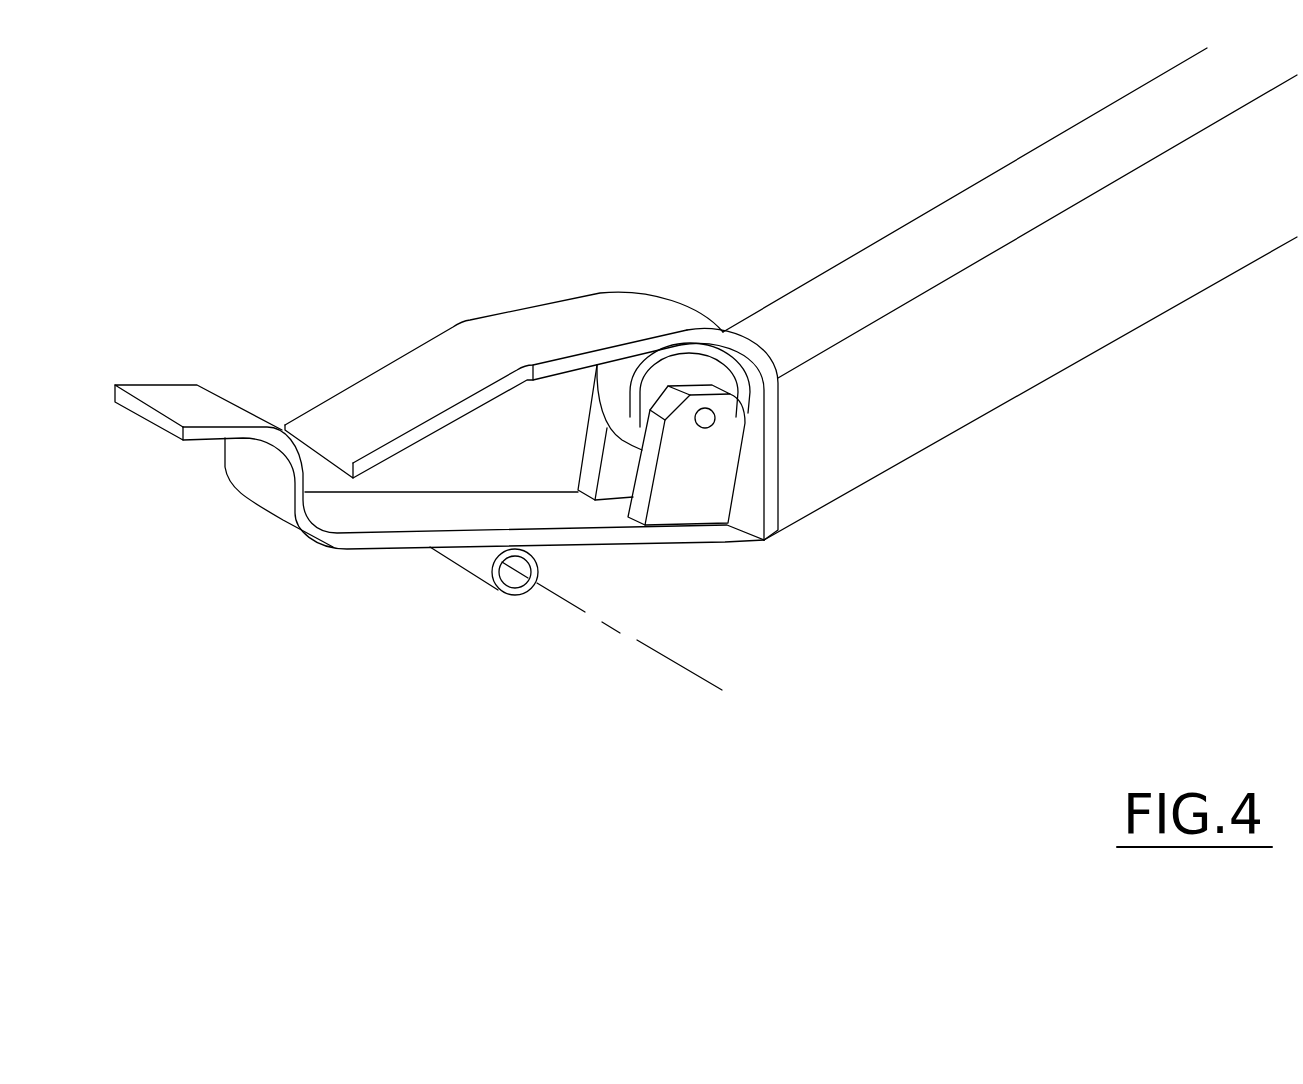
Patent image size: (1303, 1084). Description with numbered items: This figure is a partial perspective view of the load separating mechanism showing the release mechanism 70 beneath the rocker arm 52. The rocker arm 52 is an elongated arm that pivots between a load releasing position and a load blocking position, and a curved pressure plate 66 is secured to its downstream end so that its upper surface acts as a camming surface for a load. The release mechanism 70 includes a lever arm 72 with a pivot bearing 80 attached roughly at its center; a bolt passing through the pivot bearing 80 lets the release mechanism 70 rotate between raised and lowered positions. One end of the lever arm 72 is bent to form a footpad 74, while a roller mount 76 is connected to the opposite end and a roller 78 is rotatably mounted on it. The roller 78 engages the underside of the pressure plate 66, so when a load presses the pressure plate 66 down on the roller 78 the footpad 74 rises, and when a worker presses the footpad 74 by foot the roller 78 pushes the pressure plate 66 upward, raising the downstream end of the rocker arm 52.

The rocker arm 52 is at (912, 396).
The pressure plate 66 is at (537, 323).
The release mechanism 70 is at (427, 690).
The lever arm 72 is at (377, 548).
The footpad 74 is at (182, 400).
The roller mount 76 is at (697, 507).
The roller 78 is at (635, 382).
The pivot bearing 80 is at (512, 597).